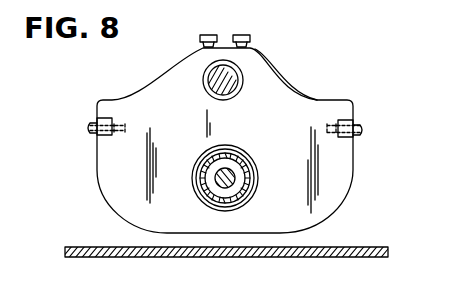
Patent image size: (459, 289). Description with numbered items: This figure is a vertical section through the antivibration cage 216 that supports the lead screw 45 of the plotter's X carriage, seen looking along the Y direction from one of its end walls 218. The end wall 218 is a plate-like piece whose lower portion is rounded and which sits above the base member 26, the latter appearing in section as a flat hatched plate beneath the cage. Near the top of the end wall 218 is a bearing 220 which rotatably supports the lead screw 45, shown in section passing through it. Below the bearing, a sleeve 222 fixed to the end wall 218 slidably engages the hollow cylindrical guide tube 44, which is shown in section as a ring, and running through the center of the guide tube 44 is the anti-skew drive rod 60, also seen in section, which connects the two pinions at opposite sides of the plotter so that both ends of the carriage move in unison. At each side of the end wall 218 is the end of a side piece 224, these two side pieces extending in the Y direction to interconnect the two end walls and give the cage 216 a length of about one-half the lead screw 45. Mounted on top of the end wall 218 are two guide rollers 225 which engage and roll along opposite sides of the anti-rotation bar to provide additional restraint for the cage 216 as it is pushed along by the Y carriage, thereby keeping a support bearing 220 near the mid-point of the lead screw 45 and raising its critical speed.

The cage 216 is at (159, 80).
The end wall 218 is at (308, 95).
The bearing 220 is at (237, 68).
The lead screw 45 is at (235, 86).
The guide rollers 225 is at (237, 35).
The side piece 224 is at (97, 118).
The sleeve 222 is at (247, 156).
The drive or anti-skew rod 60 is at (235, 177).
The hollow cylindrical tube 44 is at (249, 185).
The base member 26 is at (327, 247).